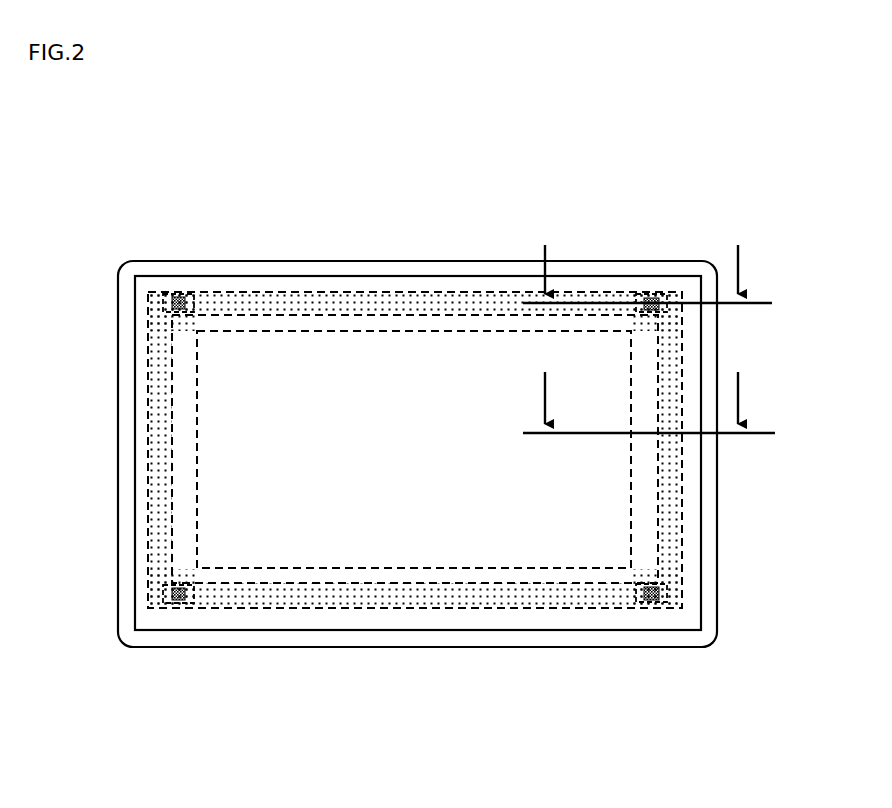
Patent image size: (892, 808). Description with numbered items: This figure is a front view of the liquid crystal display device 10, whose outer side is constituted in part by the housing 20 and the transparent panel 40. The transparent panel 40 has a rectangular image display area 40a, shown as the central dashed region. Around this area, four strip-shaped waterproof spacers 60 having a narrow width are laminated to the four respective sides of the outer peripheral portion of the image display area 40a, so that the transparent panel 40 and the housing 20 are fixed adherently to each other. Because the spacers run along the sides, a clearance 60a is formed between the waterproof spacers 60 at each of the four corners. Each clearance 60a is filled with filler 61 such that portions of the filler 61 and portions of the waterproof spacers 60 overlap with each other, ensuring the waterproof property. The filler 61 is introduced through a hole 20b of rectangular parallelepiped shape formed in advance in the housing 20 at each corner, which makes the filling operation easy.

The liquid crystal display device 10 is at (427, 151).
The housing 20 is at (145, 268).
The hole 20b is at (167, 300).
The transparent panel 40 is at (145, 352).
The image display area 40a is at (332, 513).
The waterproof spacer 60 is at (402, 303).
The clearance 60a is at (168, 305).
The filler 61 is at (182, 305).